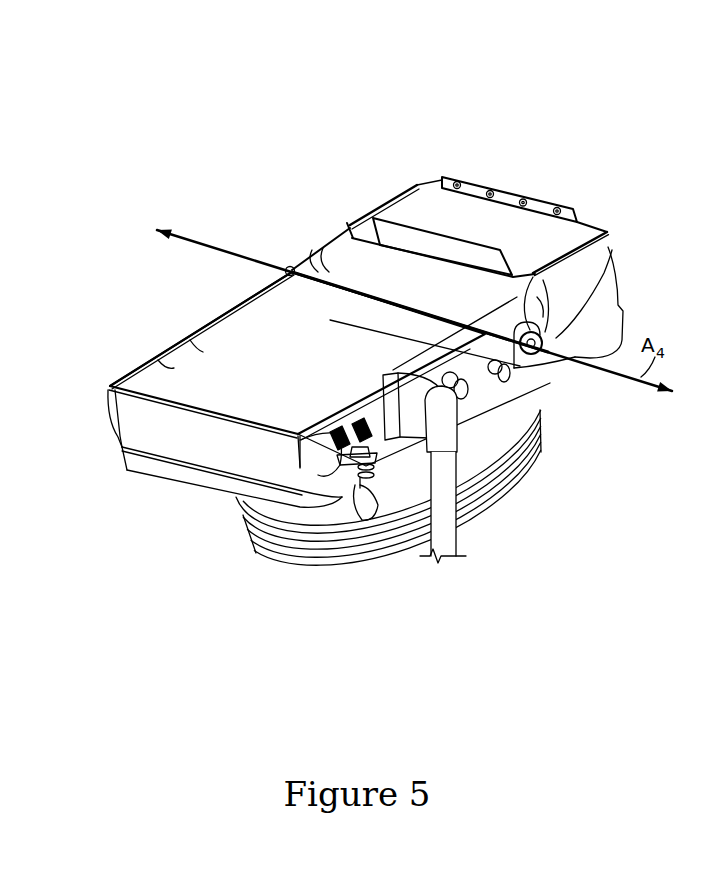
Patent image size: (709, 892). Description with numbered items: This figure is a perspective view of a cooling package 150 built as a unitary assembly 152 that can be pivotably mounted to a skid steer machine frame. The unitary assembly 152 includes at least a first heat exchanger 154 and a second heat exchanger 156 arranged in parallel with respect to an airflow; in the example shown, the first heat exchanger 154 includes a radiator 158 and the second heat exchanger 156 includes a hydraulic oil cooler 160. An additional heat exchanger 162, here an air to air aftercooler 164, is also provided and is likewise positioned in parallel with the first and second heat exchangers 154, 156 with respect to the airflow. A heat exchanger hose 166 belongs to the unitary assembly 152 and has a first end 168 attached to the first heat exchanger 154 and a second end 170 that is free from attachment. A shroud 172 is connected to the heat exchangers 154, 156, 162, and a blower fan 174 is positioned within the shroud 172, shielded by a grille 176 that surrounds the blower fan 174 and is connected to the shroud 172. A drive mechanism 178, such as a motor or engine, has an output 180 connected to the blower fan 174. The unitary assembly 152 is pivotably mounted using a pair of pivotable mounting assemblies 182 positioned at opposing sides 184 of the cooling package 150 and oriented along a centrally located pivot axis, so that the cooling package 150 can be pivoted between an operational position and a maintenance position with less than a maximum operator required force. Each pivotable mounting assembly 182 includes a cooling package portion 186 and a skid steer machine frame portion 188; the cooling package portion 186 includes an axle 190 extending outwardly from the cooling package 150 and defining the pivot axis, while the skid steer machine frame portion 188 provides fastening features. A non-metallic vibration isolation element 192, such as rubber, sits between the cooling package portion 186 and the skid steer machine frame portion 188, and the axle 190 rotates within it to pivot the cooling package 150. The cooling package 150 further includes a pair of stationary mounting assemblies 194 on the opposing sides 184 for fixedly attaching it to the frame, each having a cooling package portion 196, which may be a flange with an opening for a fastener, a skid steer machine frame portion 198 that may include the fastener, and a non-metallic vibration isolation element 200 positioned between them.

The cooling package 150 is at (561, 160).
The unitary assembly 152 is at (247, 295).
The first heat exchanger 154 is at (328, 258).
The second heat exchanger 156 is at (178, 343).
The radiator 158 is at (288, 268).
The hydraulic oil cooler 160 is at (157, 360).
The additional heat exchanger 162 is at (427, 195).
The air to air aftercooler 164 is at (412, 198).
The heat exchanger hose 166 is at (455, 525).
The first end 168 is at (476, 448).
The second end 170 is at (454, 576).
The shroud 172 is at (210, 500).
The blower fan 174 is at (248, 525).
The grille 176 is at (274, 556).
The drive mechanism 178 is at (385, 557).
The output 180 is at (318, 572).
The pivotable mounting assembly 182 is at (266, 271).
The opposing sides 184 is at (200, 326).
The cooling package portion 186 is at (549, 330).
The skid steer machine frame portion 188 is at (290, 270).
The axle 190 is at (546, 372).
The non-metallic vibration isolation element 192 is at (533, 272).
The stationary mounting assembly 194 is at (341, 467).
The cooling package portion 196 is at (338, 427).
The skid steer machine frame portion 198 is at (335, 433).
The non-metallic vibration isolation element 200 is at (365, 520).